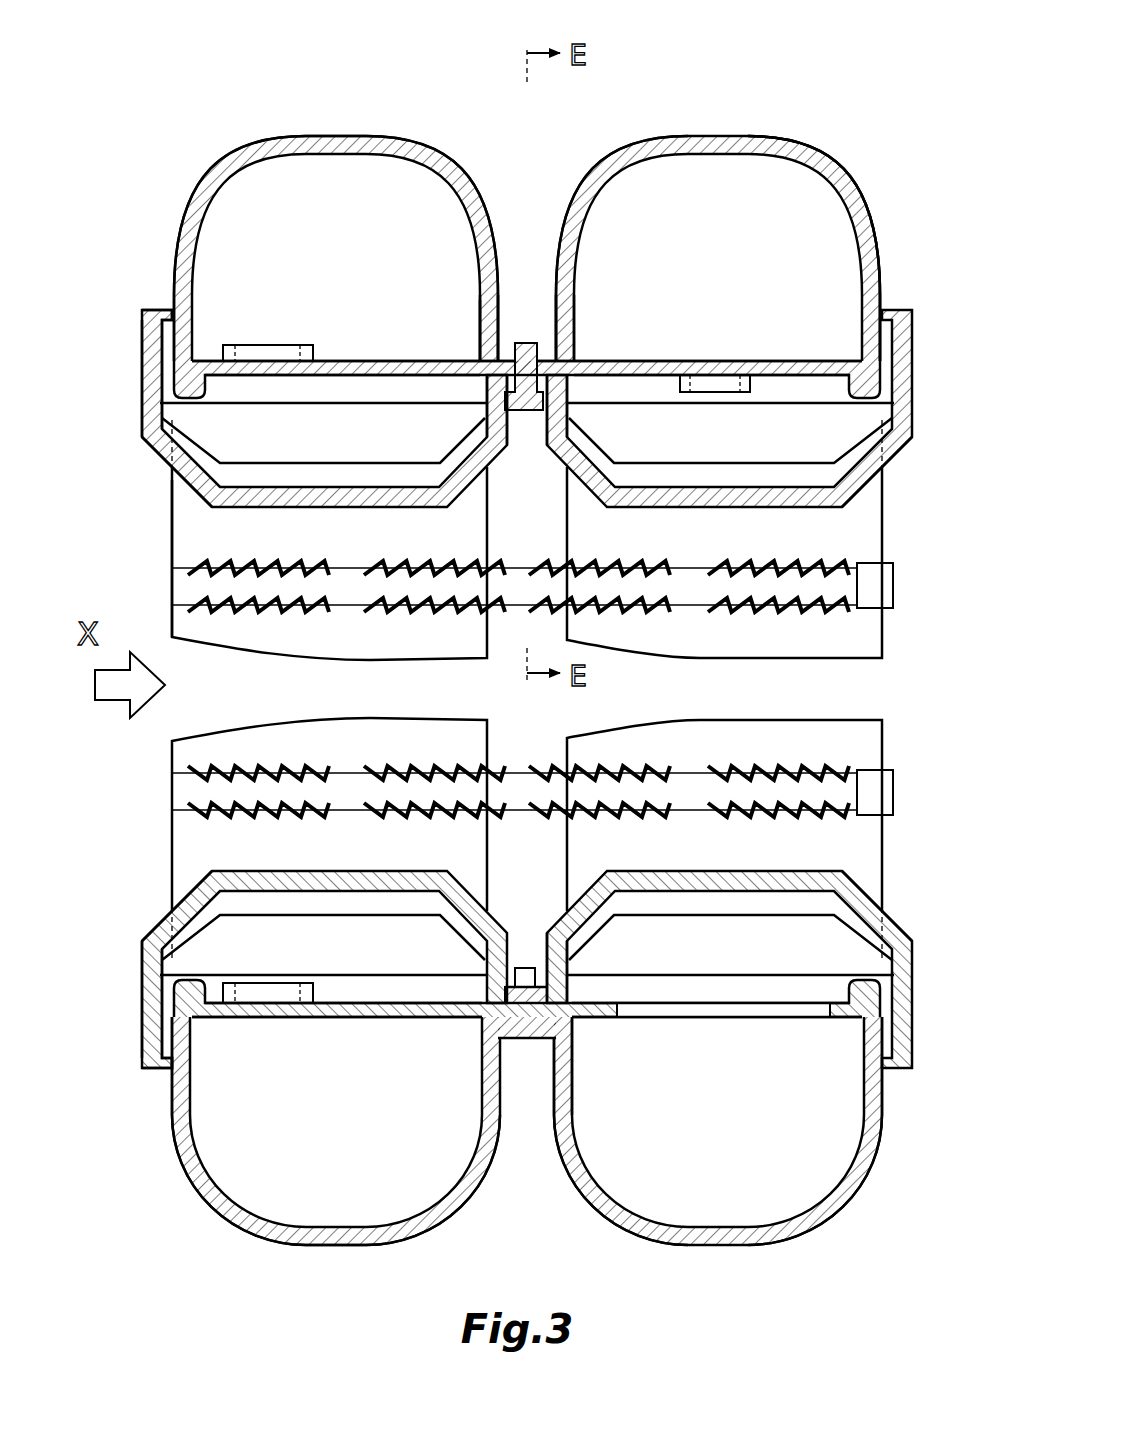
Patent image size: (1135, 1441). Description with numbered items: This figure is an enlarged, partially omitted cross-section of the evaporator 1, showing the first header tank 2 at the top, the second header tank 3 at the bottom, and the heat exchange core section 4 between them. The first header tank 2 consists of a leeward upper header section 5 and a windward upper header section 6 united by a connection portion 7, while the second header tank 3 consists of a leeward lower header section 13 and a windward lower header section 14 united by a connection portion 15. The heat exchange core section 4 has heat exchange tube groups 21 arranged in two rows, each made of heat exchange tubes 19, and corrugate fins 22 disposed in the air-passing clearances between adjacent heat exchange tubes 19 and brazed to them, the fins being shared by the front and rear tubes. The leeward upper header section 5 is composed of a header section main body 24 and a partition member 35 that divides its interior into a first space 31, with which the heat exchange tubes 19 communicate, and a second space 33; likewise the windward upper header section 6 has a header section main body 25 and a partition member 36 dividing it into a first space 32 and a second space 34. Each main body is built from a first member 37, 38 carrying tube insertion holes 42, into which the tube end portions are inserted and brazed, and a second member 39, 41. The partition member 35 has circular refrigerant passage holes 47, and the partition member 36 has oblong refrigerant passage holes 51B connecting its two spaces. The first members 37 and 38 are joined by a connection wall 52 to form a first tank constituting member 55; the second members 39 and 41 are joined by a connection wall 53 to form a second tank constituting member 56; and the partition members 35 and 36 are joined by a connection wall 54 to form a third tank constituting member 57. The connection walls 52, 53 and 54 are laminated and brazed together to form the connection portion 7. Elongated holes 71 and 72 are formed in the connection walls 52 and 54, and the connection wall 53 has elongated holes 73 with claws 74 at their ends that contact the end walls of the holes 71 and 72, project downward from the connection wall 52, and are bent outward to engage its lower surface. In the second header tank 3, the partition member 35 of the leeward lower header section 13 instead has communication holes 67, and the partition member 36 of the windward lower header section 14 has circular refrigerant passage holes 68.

The evaporator 1 is at (848, 132).
The first header tank 2 is at (724, 96).
The second header tank 3 is at (852, 1240).
The heat exchange core section 4 is at (158, 614).
The leeward upper header section 5 is at (660, 76).
The windward upper header section 6 is at (378, 134).
The connection portion 7 is at (527, 338).
The leeward lower header section 13 is at (670, 1247).
The windward lower header section 14 is at (372, 1247).
The connection portion 15 is at (527, 1066).
The heat exchange tubes 19 is at (172, 740).
The heat exchange tube groups 21 is at (372, 640).
The corrugate fins 22 is at (888, 605).
The header section main body 24 is at (840, 170).
The header section main body 25 is at (212, 170).
The first space 31 is at (805, 375).
The first space 32 is at (360, 378).
The second space 33 is at (632, 183).
The second space 34 is at (415, 178).
The partition member 35 is at (660, 370).
The partition member 36 is at (398, 370).
The first member 37 is at (780, 508).
The first member 38 is at (275, 508).
The second member 39 is at (780, 136).
The second member 41 is at (285, 140).
The tube insertion holes 42 is at (145, 430).
The circular refrigerant passage holes 47 is at (700, 376).
The oblong refrigerant passage holes 51B is at (245, 344).
The connection wall 52 is at (530, 416).
The connection wall 53 is at (558, 352).
The connection wall 54 is at (560, 400).
The first tank constituting member 55 is at (150, 382).
The second tank constituting member 56 is at (335, 136).
The third tank constituting member 57 is at (150, 308).
The communication holes 67 is at (695, 1020).
The circular refrigerant passage holes 68 is at (258, 1005).
The elongated holes 71 is at (490, 414).
The elongated holes 72 is at (512, 376).
The elongated holes 73 is at (500, 352).
The claws 74 is at (548, 372).